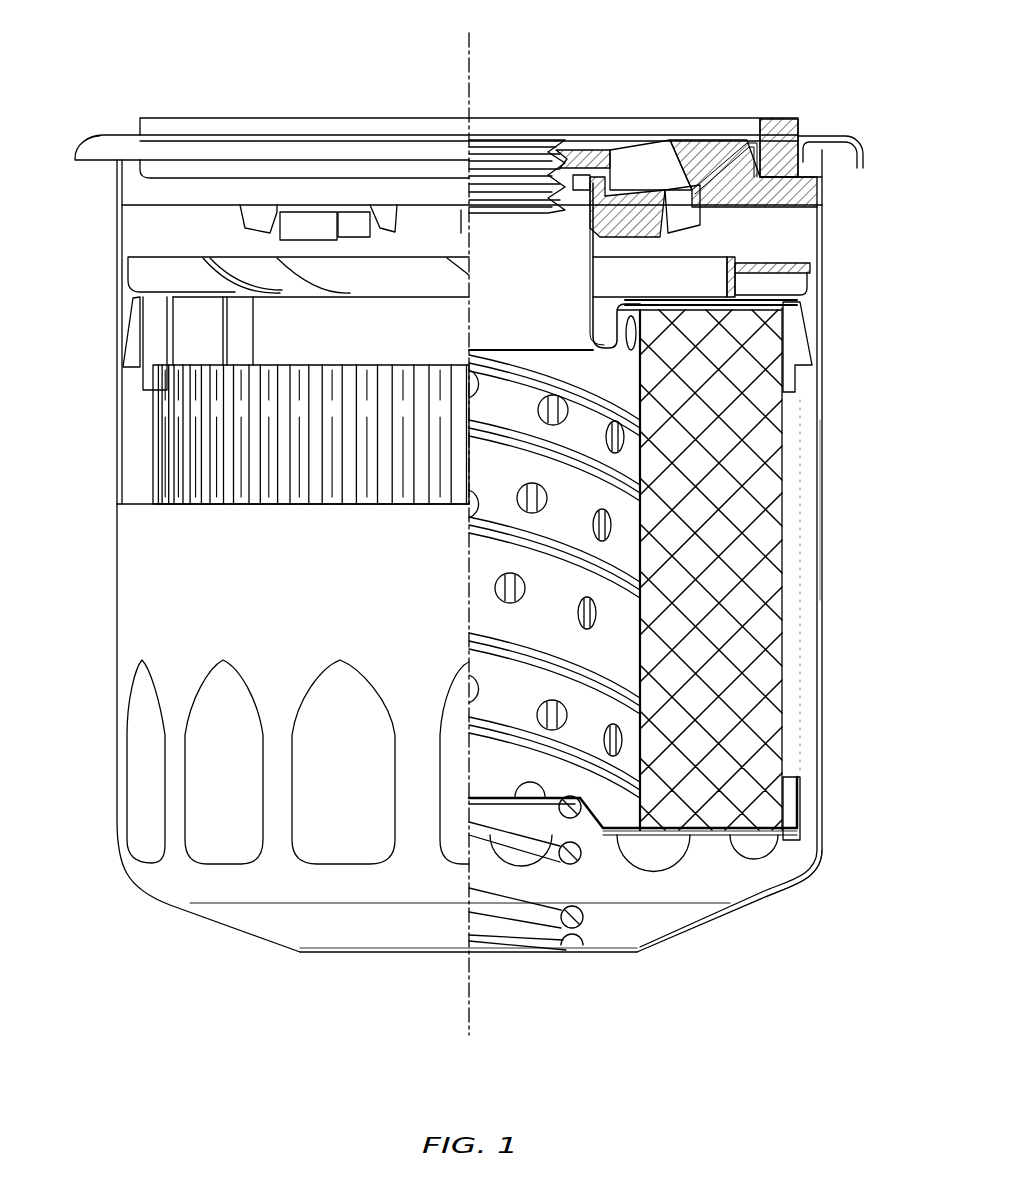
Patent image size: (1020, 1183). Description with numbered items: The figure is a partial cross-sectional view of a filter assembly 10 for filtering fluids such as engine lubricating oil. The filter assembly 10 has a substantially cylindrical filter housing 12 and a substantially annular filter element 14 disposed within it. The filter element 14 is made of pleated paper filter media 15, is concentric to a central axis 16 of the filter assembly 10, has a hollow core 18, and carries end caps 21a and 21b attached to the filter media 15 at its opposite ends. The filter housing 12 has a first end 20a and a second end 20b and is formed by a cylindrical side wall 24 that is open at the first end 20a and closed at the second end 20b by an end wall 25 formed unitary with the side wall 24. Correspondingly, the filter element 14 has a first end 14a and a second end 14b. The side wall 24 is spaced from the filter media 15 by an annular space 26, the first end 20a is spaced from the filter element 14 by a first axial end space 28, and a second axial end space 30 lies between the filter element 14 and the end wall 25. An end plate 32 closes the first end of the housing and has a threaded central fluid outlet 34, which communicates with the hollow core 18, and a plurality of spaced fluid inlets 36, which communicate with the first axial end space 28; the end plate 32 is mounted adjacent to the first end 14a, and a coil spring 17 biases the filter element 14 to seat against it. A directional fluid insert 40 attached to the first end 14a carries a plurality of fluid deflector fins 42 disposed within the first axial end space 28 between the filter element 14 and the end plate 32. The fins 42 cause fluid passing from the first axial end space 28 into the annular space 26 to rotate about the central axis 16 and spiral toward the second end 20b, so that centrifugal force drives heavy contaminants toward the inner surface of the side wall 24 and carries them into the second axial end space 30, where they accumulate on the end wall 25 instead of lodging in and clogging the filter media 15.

The filter assembly 10 is at (76, 649).
The filter housing 12 is at (826, 418).
The filter element 14 is at (630, 772).
The first end of the filter element 14a is at (780, 333).
The second end of the filter element 14b is at (740, 807).
The filter media 15 is at (740, 700).
The central axis 16 is at (469, 50).
The coil spring 17 is at (510, 850).
The hollow core 18 is at (510, 625).
The first end of the filter housing 20a is at (822, 207).
The second end of the filter housing 20b is at (812, 867).
The end cap 21a is at (805, 352).
The end cap 21b is at (800, 780).
The side wall 24 is at (822, 567).
The end wall 25 is at (500, 955).
The annular space 26 is at (803, 508).
The first axial end space 28 is at (745, 247).
The second axial end space 30 is at (664, 898).
The end plate 32 is at (707, 170).
The threaded central fluid outlet 34 is at (500, 180).
The fluid inlet 36 is at (660, 173).
The directional fluid insert 40 is at (136, 329).
The fluid deflector fin 42 is at (780, 257).